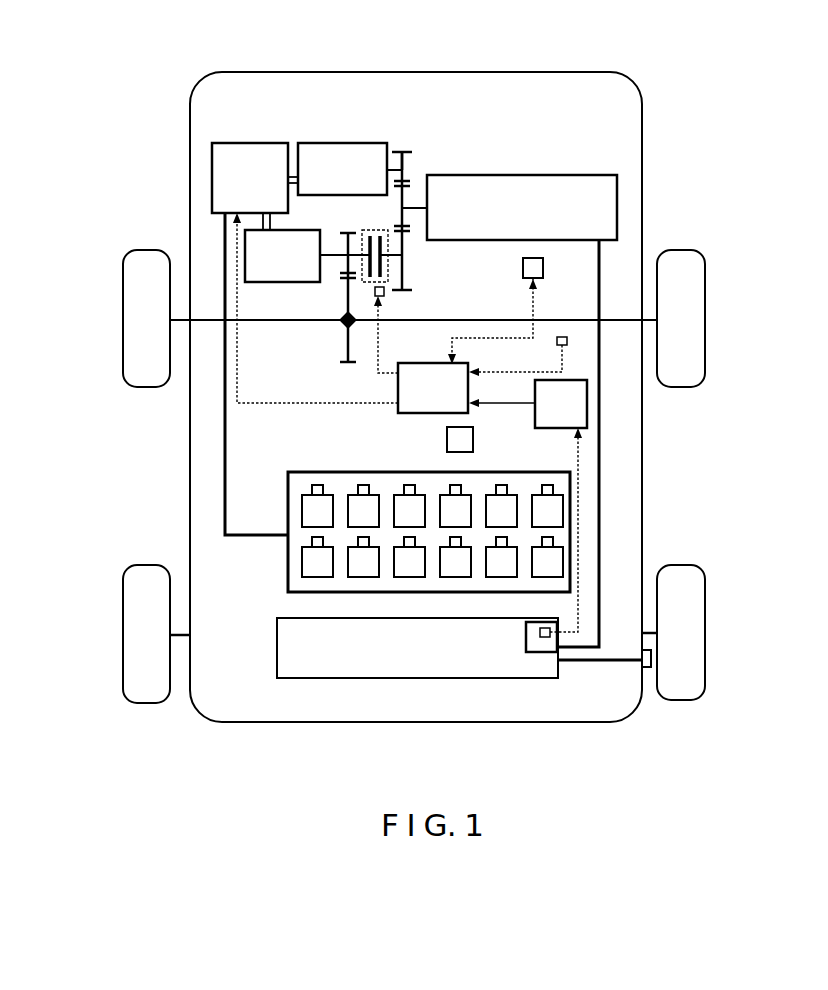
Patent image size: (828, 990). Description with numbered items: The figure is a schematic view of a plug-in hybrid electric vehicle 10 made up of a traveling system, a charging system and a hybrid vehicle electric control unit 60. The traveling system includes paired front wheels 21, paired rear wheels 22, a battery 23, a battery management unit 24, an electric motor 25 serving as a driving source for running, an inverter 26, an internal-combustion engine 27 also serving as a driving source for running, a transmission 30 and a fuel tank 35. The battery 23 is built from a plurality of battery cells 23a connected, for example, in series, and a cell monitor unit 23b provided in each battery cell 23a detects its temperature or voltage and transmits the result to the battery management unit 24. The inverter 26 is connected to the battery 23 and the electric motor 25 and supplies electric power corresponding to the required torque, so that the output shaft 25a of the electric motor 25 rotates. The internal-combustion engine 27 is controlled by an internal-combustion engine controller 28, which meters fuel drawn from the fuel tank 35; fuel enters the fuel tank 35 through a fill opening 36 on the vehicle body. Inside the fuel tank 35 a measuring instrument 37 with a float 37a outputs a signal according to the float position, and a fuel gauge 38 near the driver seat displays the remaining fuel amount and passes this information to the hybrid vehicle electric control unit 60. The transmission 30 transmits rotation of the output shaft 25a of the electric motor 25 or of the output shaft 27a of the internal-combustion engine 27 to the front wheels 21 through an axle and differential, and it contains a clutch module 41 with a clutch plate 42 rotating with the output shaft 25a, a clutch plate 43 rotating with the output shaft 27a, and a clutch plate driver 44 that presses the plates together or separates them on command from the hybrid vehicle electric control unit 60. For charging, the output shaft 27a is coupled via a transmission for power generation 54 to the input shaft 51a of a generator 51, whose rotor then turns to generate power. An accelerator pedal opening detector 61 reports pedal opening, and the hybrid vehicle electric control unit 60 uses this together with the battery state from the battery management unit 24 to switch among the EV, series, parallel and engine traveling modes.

The plug-in hybrid electric vehicle 10 is at (538, 66).
The front wheels 21 is at (123, 300).
The rear wheels 22 is at (123, 612).
The battery 23 is at (280, 566).
The battery cell 23a is at (303, 512).
The cell monitor unit 23b is at (317, 485).
The battery management unit 24 is at (473, 440).
The electric motor 25 is at (258, 282).
The output shaft 25a is at (345, 280).
The inverter 26 is at (248, 143).
The internal-combustion engine 27 is at (585, 175).
The output shaft 27a is at (404, 208).
The internal-combustion engine controller 28 is at (543, 268).
The transmission 30 is at (422, 273).
The fuel tank 35 is at (315, 678).
The fill opening 36 is at (647, 667).
The measuring instrument 37 is at (540, 652).
The float 37a is at (540, 633).
The fuel gauge 38 is at (587, 400).
The clutch module 41 is at (364, 290).
The clutch plate 42 is at (369, 236).
The clutch plate 43 is at (381, 236).
The clutch plate driver 44 is at (384, 293).
The generator 51 is at (300, 143).
The input shaft 51a is at (402, 162).
The transmission for power generation 54 is at (405, 181).
The hybrid vehicle electric control unit 60 is at (410, 413).
The accelerator pedal opening detector 61 is at (565, 346).